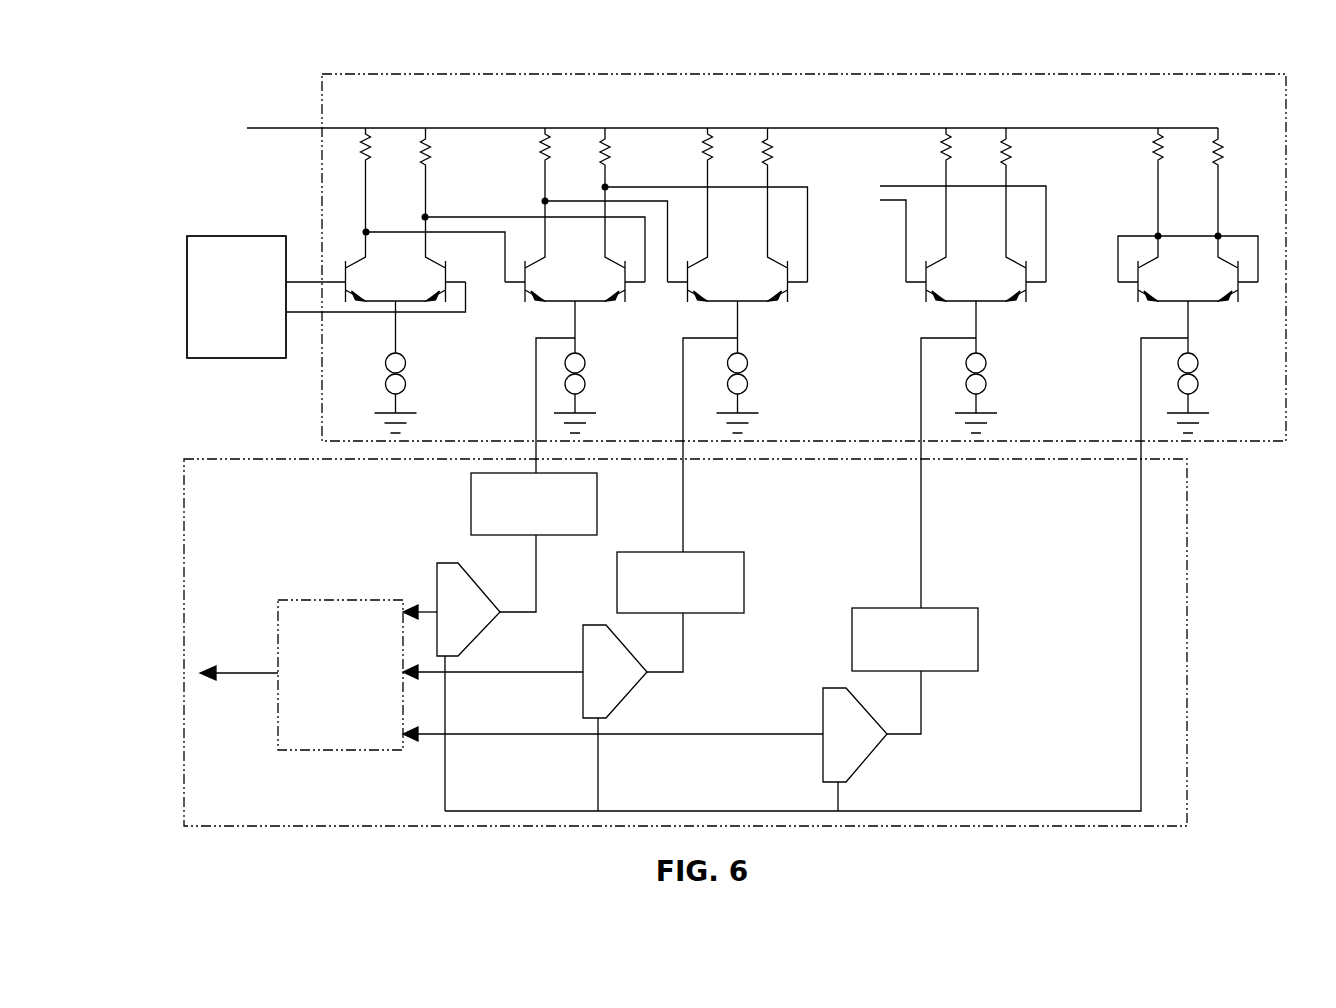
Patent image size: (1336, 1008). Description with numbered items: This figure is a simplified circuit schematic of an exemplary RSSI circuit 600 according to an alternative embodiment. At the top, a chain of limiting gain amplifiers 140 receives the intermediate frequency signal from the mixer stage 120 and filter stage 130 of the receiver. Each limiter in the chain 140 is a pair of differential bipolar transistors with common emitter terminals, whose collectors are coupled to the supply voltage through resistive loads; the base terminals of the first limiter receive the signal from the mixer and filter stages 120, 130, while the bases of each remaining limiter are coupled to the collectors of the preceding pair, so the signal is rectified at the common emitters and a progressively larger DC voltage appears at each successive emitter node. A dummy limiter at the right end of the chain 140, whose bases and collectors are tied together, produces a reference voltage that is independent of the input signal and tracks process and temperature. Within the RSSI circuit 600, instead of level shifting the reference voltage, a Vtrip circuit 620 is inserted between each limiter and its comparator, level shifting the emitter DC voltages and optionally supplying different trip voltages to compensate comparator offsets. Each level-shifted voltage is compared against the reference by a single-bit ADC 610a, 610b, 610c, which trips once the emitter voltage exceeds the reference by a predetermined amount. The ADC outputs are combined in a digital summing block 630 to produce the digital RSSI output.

The chain of limiting gain amplifiers 140 is at (371, 71).
The mixer stage 120 is at (254, 234).
The filter stage 130 is at (236, 297).
The RSSI circuit 600 is at (237, 455).
The Vtrip circuit 620 is at (724, 572).
The single-bit ADC 610a is at (443, 624).
The single-bit ADC 610b is at (589, 687).
The single-bit ADC 610c is at (830, 749).
The digital summing block 630 is at (364, 747).